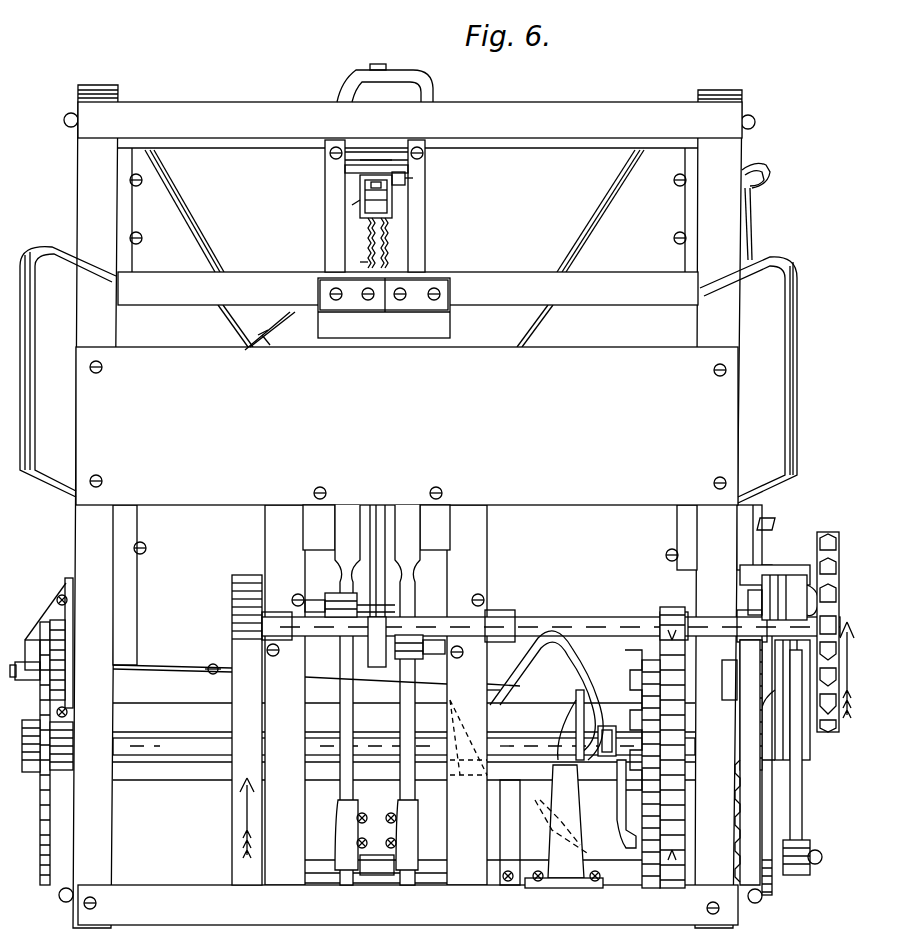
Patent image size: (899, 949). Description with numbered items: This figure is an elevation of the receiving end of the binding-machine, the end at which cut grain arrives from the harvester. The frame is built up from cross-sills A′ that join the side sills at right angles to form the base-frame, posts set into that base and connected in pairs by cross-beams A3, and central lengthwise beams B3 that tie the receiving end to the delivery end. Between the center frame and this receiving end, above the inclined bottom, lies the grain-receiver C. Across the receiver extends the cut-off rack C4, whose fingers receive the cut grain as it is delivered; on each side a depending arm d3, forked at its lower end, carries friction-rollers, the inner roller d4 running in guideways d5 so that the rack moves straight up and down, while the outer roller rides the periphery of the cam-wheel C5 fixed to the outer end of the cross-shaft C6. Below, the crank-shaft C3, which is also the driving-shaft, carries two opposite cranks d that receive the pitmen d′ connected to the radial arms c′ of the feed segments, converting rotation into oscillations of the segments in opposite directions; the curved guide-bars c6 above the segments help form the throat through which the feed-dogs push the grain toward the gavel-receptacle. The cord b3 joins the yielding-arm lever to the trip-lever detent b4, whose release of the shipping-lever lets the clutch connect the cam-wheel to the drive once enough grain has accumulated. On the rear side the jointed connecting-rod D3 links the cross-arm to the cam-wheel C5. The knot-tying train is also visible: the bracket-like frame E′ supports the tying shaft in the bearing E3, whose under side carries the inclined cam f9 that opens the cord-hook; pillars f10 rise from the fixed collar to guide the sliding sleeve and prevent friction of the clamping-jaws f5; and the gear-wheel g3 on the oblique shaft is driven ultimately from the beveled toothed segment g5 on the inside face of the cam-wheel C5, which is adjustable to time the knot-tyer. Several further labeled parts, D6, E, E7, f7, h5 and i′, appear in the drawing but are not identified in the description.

The cross-beams A3 is at (409, 303).
The cross-sills A′ is at (410, 905).
The central lengthwise beams B3 is at (376, 527).
The cord b3 is at (198, 678).
The trip-lever detent b4 is at (545, 695).
The grain-receiver C is at (384, 308).
The curved guide-bars c6 is at (384, 295).
The crank-shaft C3 is at (551, 617).
The cut-off rack C4 is at (233, 730).
The cam-wheel C5 is at (400, 739).
The cross-shaft C6 is at (404, 741).
The radial arms c′ is at (377, 695).
The jointed connecting-rod D3 is at (811, 703).
The clutch block D6 is at (779, 564).
The cranks d is at (376, 636).
The pitmen d′ is at (375, 626).
The depending arm d3 is at (410, 671).
The inner friction-roller d4 is at (406, 682).
The guideways d5 is at (379, 675).
The rack E is at (655, 738).
The bracket-like frame E′ is at (500, 474).
The bearing E3 is at (408, 459).
The lever E7 is at (571, 719).
The clamping-jaws f5 is at (373, 196).
The chains f7 is at (383, 243).
The inclined cam f9 is at (406, 180).
The pillars f10 is at (358, 260).
The gear-wheel g3 is at (766, 207).
The beveled toothed segment g5 is at (747, 762).
The handle h5 is at (554, 141).
The pin i′ is at (263, 325).